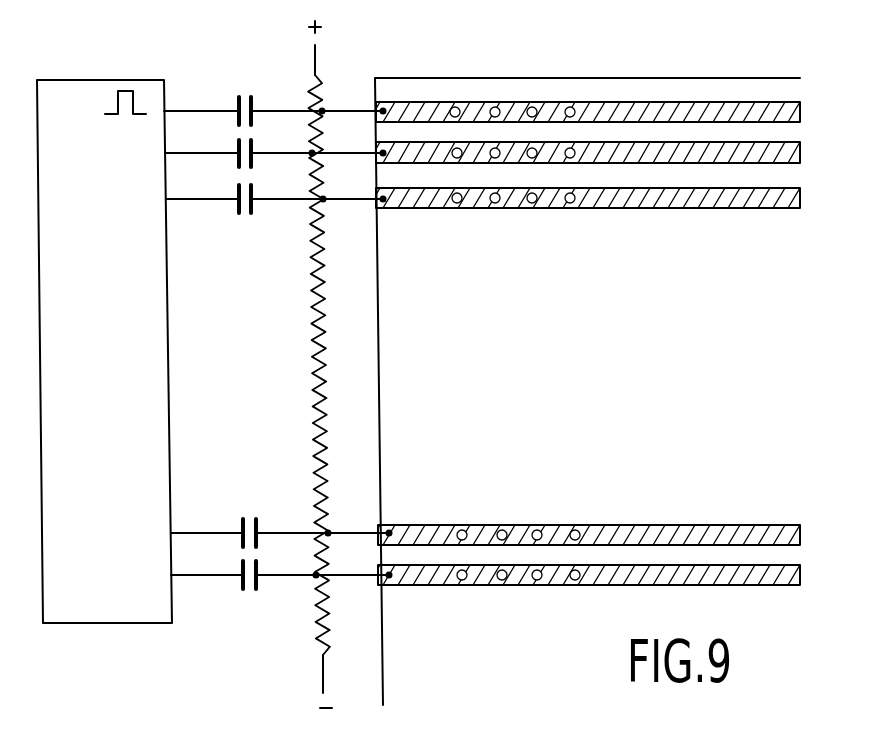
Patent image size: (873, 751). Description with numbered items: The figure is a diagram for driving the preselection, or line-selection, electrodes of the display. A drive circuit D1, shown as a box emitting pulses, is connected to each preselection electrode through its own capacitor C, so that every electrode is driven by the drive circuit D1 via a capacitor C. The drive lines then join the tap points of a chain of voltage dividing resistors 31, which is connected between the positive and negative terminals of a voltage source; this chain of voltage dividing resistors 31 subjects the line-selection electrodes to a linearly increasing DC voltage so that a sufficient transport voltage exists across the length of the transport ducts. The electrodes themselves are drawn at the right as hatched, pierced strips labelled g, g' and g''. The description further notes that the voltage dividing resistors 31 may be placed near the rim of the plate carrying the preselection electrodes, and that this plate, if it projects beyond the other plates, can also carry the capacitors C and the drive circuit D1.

The drive circuit D1 is at (108, 612).
The capacitor C is at (246, 96).
The voltage dividing resistors 31 is at (315, 264).
The first electrode layer g is at (598, 109).
The second electrode layer g' is at (601, 154).
The third electrode layer g'' is at (604, 198).